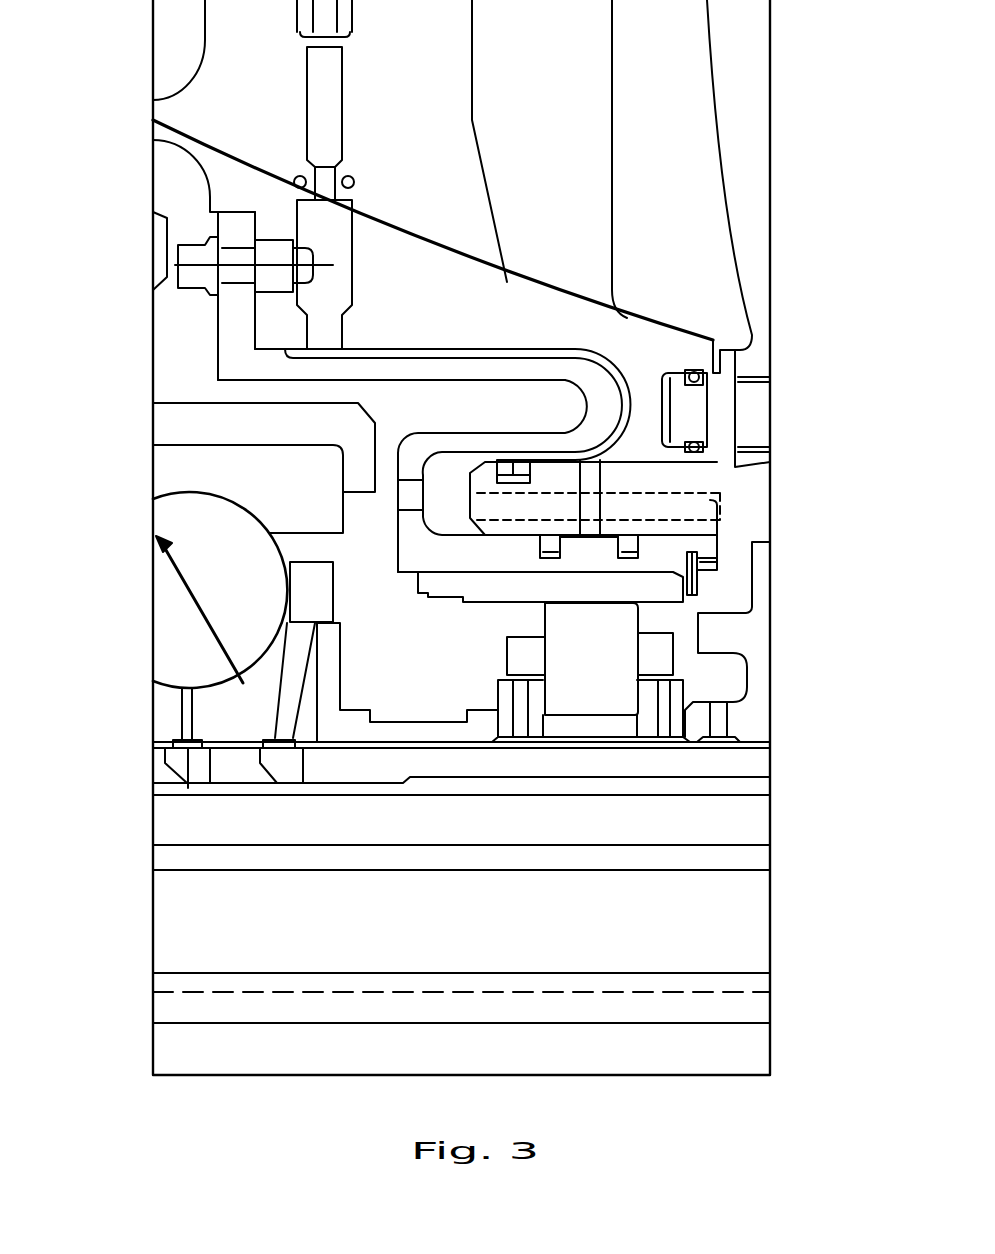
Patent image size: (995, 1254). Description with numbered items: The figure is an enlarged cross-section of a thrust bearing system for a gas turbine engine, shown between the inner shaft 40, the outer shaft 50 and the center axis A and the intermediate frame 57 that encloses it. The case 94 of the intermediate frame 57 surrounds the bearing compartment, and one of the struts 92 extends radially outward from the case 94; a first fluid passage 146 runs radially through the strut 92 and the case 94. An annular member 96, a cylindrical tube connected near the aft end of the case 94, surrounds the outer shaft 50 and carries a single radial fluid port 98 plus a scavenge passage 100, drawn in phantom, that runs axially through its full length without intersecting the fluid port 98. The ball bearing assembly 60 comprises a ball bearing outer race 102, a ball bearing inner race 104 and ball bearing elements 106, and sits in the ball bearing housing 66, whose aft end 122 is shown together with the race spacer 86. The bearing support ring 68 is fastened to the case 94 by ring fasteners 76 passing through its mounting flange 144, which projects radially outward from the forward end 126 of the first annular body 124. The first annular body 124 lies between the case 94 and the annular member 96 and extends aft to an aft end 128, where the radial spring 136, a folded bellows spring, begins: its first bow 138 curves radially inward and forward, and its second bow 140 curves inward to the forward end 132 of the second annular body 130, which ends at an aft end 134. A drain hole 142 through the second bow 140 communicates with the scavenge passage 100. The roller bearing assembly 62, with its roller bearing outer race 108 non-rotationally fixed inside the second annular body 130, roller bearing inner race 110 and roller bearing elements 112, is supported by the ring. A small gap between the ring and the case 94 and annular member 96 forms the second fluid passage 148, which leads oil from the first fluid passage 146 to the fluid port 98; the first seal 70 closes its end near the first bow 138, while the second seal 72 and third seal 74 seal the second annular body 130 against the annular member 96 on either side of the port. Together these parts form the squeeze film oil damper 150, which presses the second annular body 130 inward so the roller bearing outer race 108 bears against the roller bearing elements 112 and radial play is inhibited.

The inner shaft 40 is at (752, 915).
The outer shaft 50 is at (737, 815).
The intermediate frame 57 is at (690, 326).
The ball bearing assembly 60 is at (183, 490).
The roller bearing assembly 62 is at (474, 691).
The ball bearing housing 66 is at (275, 422).
The bearing support ring 68 is at (488, 370).
The first seal 70 is at (505, 460).
The second seal 72 is at (552, 548).
The third seal 74 is at (630, 548).
The ring fasteners 76 is at (192, 253).
The race spacer 86 is at (400, 733).
The struts 92 is at (612, 60).
The case 94 is at (373, 260).
The annular member 96 is at (502, 527).
The fluid port 98 is at (600, 477).
The scavenge passage 100 is at (722, 505).
The ball bearing outer race 102 is at (212, 463).
The ball bearing inner race 104 is at (232, 712).
The ball bearing elements 106 is at (220, 590).
The roller bearing outer race 108 is at (483, 588).
The roller bearing inner race 110 is at (583, 727).
The roller bearing elements 112 is at (590, 659).
The aft end 122 is at (333, 437).
The first annular body 124 is at (375, 373).
The forward end 126 is at (250, 368).
The aft end 128 is at (557, 372).
The second annular body 130 is at (660, 553).
The forward end 132 is at (410, 562).
The aft end 134 is at (717, 543).
The radial spring 136 is at (550, 448).
The first bow 138 is at (610, 414).
The second bow 140 is at (417, 460).
The drain hole 142 is at (408, 500).
The mounting flange 144 is at (237, 233).
The first fluid passage 146 is at (325, 118).
The second fluid passage 148 is at (450, 345).
The squeeze film oil damper 150 is at (600, 526).
The center axis A is at (752, 992).